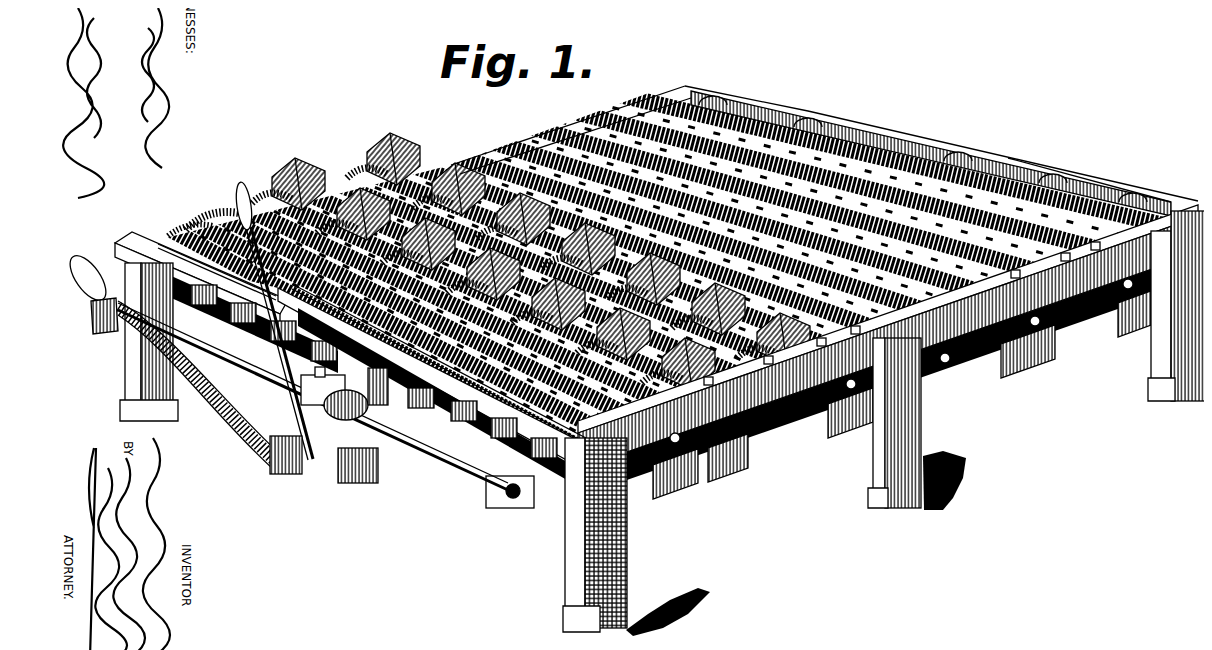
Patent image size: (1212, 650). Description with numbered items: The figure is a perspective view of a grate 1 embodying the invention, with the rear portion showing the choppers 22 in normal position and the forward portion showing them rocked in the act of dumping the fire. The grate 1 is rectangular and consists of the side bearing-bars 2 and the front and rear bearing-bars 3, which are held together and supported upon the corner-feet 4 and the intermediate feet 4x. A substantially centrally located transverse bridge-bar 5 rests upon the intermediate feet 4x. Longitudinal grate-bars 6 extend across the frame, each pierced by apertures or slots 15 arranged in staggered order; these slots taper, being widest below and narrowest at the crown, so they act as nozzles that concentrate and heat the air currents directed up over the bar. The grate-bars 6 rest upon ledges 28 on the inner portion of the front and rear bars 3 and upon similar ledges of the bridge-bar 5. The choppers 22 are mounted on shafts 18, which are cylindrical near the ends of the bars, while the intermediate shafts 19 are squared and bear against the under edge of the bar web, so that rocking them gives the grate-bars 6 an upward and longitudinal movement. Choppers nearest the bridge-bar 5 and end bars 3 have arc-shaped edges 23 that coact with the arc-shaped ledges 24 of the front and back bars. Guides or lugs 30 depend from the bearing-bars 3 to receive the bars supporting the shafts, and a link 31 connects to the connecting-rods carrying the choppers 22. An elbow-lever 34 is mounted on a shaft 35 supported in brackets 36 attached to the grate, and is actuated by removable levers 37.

The grate 1 is at (935, 98).
The side bearing-bars 2 is at (650, 100).
The front and rear bearing-bars 3 is at (128, 232).
The corner-feet 4 is at (117, 358).
The intermediate feet 4x is at (868, 446).
The transverse bridge-bar 5 is at (470, 158).
The longitudinal grate-bar 6 is at (196, 240).
The apertures or slots 15 is at (272, 196).
The shafts 18 is at (662, 455).
The intermediate shafts 19 is at (1033, 328).
The choppers 22 is at (430, 150).
The arc-shaped edges 23 is at (212, 204).
The arc-shaped ledges 24 is at (705, 92).
The ledges 28 is at (205, 292).
The guides or lugs 30 is at (335, 380).
The link 31 is at (432, 418).
The elbow-lever 34 is at (296, 466).
The shaft 35 is at (236, 355).
The brackets 36 is at (84, 306).
The levers 37 is at (290, 400).